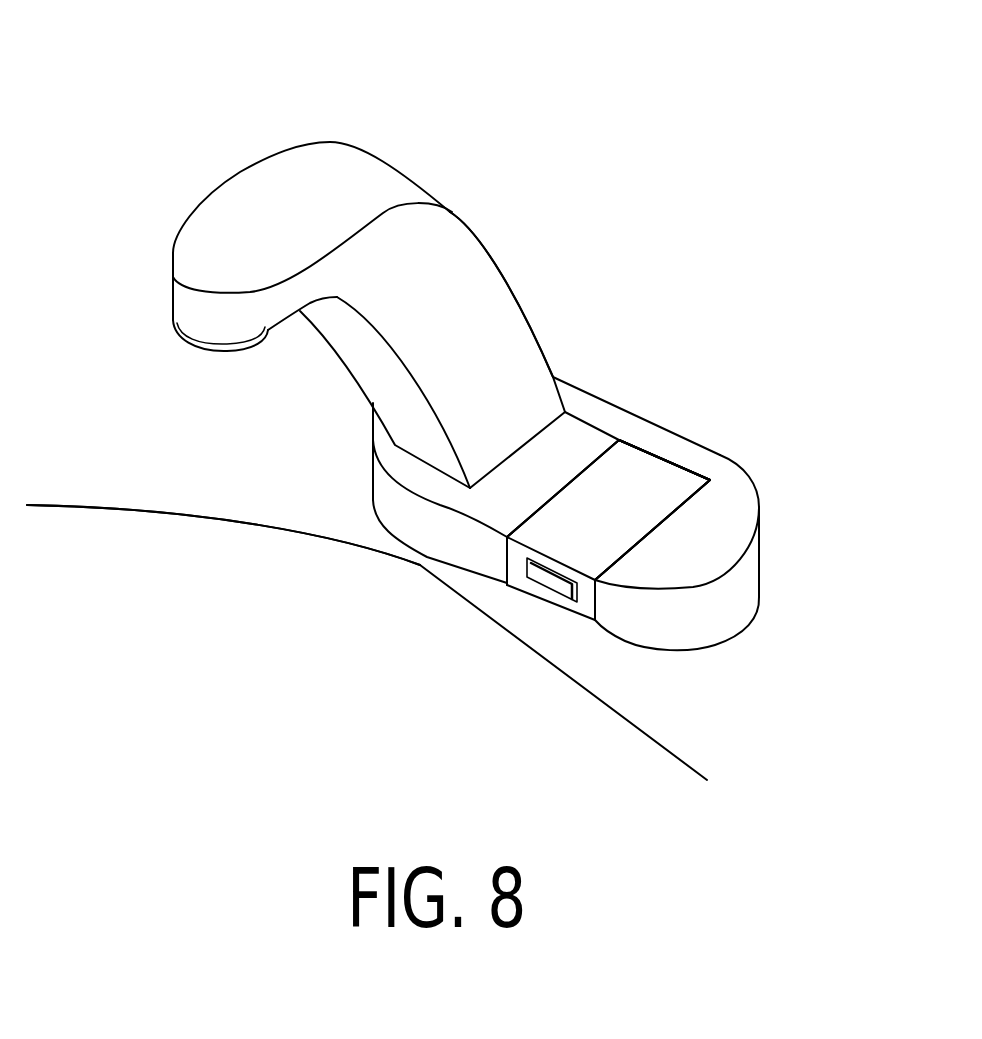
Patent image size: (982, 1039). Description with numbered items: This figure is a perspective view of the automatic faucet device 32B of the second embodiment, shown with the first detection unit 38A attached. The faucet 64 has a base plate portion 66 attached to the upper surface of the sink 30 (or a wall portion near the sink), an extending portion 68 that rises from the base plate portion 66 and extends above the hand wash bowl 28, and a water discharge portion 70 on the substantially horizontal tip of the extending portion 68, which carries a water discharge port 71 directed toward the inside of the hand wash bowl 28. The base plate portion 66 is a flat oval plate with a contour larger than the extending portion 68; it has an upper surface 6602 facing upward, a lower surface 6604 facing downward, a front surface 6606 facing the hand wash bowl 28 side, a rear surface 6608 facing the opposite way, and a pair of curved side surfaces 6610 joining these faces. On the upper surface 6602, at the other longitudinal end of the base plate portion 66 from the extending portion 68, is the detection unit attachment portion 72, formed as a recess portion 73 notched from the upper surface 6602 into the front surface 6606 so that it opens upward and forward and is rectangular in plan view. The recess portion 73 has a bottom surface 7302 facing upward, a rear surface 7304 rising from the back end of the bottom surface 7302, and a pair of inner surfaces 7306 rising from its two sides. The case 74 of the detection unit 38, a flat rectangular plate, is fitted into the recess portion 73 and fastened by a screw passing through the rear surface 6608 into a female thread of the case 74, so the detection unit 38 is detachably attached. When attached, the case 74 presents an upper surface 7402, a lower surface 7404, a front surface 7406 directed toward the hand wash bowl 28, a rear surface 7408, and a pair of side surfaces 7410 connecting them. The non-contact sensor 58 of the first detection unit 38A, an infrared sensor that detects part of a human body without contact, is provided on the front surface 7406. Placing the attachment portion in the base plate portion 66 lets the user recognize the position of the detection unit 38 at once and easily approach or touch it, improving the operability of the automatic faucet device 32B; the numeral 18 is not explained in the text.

The automatic faucet device 32B is at (450, 89).
The water discharge portion 70 is at (240, 212).
The water discharge port 71 is at (220, 353).
The faucet 64 is at (481, 240).
The extending portion 68 is at (519, 305).
The base plate portion 66 is at (583, 420).
The rear surface 6608 is at (588, 474).
The upper surface 6602 is at (723, 494).
The lower surface 6604 is at (701, 645).
The front surface 6606 is at (460, 543).
The side surfaces 6610 is at (373, 475).
The recess portion 73 is at (620, 440).
The detection unit attachment portion 72 is at (659, 437).
The rear surface 7304 is at (649, 475).
The first detection unit 38A is at (691, 460).
The detection unit 38 is at (707, 421).
The case 74 is at (727, 421).
The rear surface 7408 is at (689, 452).
The side surfaces 7410 is at (557, 488).
The inner surfaces 7306 is at (548, 499).
The non-contact sensor 58 is at (543, 577).
The lower surface 7404 is at (567, 592).
The front surface 7406 is at (517, 571).
The upper surface 7402 is at (610, 550).
The bottom surface 7302 is at (604, 620).
The sink 30 is at (130, 447).
The table 18 is at (223, 462).
The hand wash bowl 28 is at (311, 708).